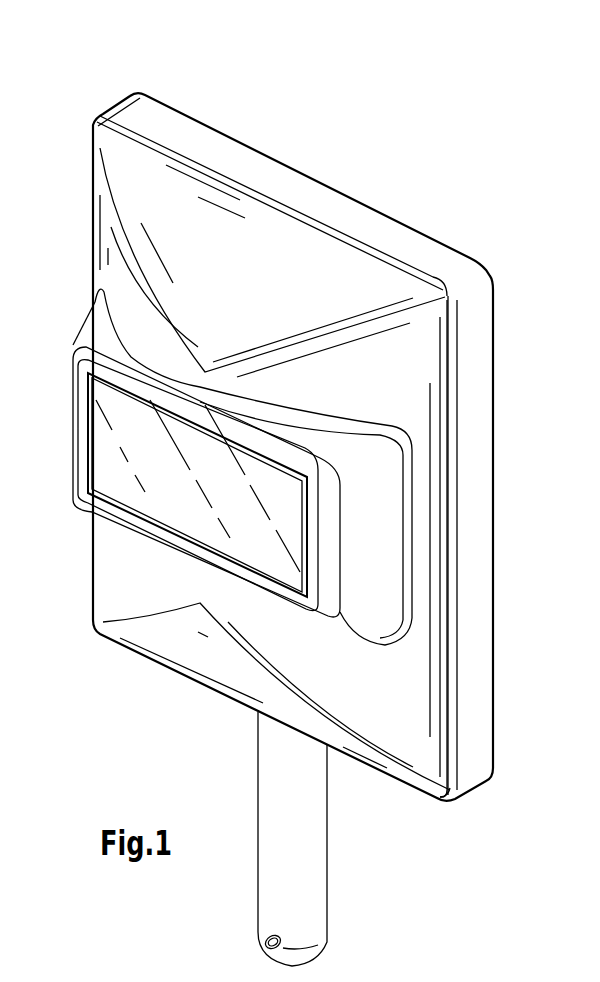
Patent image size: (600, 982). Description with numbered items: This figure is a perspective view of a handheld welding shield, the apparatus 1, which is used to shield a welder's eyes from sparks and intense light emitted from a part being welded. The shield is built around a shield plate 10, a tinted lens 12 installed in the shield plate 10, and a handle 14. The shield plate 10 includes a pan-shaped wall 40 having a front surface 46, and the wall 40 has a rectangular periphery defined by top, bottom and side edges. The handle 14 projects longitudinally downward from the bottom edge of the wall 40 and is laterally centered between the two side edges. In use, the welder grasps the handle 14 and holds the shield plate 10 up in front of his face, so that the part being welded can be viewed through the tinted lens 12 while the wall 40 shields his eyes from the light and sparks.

The apparatus 1 is at (316, 98).
The shield plate 10 is at (508, 421).
The tinted lens 12 is at (138, 455).
The handle 14 is at (315, 850).
The wall 40 is at (477, 572).
The front surface 46 is at (425, 667).